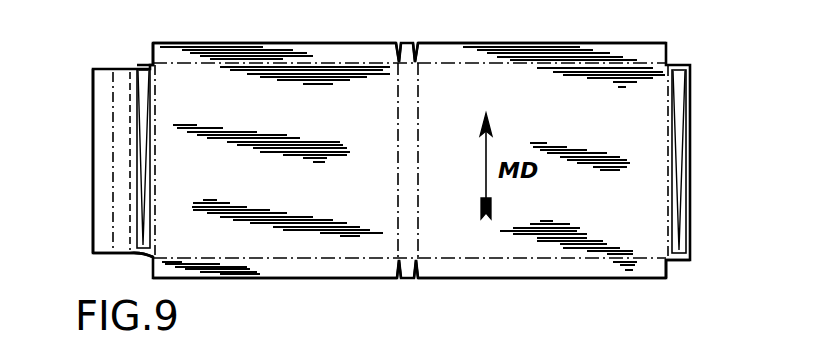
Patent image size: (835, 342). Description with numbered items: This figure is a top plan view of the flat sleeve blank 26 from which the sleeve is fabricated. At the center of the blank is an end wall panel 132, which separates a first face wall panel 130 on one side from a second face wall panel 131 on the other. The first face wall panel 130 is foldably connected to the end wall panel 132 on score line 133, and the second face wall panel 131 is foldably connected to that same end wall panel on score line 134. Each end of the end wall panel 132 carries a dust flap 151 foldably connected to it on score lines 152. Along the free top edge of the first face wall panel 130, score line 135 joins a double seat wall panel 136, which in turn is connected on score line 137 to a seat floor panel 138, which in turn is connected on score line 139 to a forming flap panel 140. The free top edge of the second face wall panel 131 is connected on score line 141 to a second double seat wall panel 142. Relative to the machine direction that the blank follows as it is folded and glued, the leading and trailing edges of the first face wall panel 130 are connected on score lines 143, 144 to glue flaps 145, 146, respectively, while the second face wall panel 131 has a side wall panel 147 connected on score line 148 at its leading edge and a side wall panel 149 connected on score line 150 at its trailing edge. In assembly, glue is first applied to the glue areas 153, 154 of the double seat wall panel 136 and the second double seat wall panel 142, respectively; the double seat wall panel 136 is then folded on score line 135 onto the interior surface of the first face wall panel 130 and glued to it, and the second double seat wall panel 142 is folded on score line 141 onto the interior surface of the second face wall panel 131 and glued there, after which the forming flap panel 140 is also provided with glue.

The sleeve blank 26 is at (731, 169).
The first face wall panel 130 is at (283, 189).
The second face wall panel 131 is at (562, 195).
The end wall panel 132 is at (405, 127).
The score line 133 is at (398, 153).
The score line 134 is at (420, 130).
The score line 135 is at (157, 162).
The double seat wall panel 136 is at (150, 66).
The score line 137 is at (130, 172).
The seat floor panel 138 is at (124, 110).
The score line 139 is at (113, 224).
The forming flap panel 140 is at (100, 257).
The score line 141 is at (668, 135).
The second double seat wall panel 142 is at (687, 263).
The score line 143 is at (224, 72).
The score line 144 is at (277, 263).
The glue flap 145 is at (347, 58).
The glue flap 146 is at (346, 277).
The side wall panel 147 is at (643, 50).
The score line 148 is at (529, 70).
The side wall panel 149 is at (568, 272).
The score line 150 is at (512, 260).
The dust flap 151 is at (402, 44).
The score lines 152 is at (407, 256).
The glue area 153 is at (148, 220).
The glue area 154 is at (682, 228).